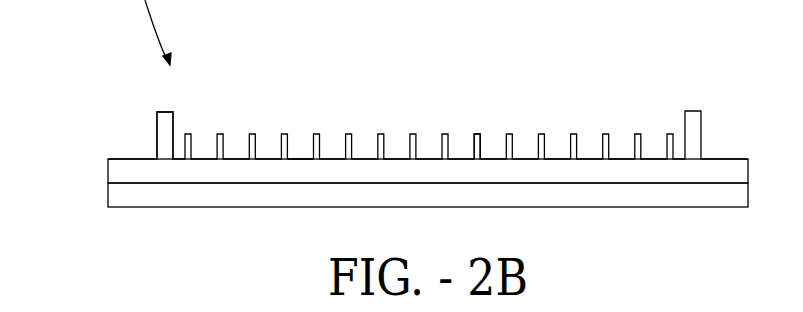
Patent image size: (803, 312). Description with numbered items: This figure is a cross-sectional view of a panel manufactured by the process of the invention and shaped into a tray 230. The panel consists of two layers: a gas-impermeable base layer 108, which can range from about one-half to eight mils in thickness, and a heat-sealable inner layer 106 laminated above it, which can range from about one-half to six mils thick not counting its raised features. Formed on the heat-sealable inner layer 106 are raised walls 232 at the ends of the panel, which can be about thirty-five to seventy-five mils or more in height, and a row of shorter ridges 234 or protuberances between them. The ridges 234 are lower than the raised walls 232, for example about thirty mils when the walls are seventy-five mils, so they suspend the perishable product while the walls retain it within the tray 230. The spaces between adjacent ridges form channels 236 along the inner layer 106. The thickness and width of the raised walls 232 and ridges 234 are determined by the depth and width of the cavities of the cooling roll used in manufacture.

The heat-sealable inner layer 106 is at (118, 172).
The gas-impermeable base layer 108 is at (177, 198).
The tray 230 is at (403, 120).
The raised walls 232 is at (157, 122).
The ridges 234 is at (478, 142).
The channel between fins 236 is at (293, 158).